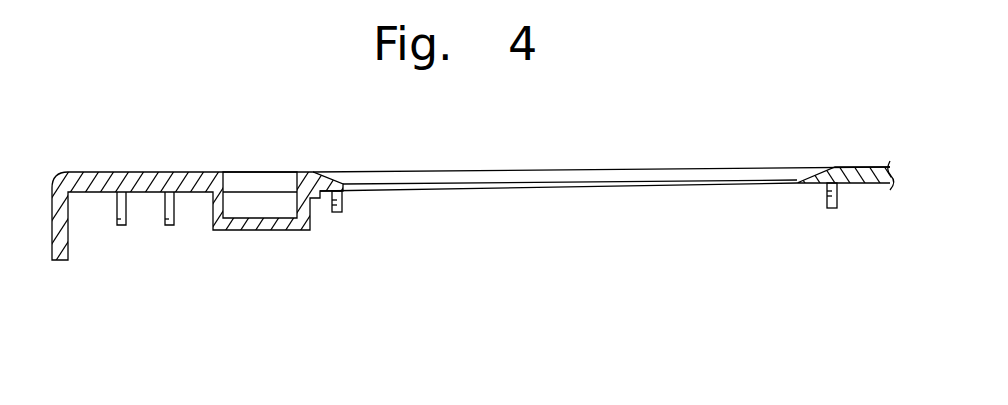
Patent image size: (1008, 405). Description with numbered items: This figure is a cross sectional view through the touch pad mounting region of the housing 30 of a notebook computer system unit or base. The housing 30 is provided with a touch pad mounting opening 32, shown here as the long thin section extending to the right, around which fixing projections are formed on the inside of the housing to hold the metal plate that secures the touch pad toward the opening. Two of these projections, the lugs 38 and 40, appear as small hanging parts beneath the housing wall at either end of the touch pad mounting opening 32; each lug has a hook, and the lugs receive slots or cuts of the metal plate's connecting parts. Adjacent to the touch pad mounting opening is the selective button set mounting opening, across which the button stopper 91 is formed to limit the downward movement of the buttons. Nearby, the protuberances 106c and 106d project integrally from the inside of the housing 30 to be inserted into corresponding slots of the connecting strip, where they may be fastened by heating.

The housing 30 is at (74, 178).
The touch pad mounting opening 32 is at (566, 176).
The lug 38 is at (837, 195).
The lug 40 is at (342, 197).
The button stopper 91 is at (272, 232).
The protuberance 106c is at (121, 226).
The protuberance 106d is at (170, 226).